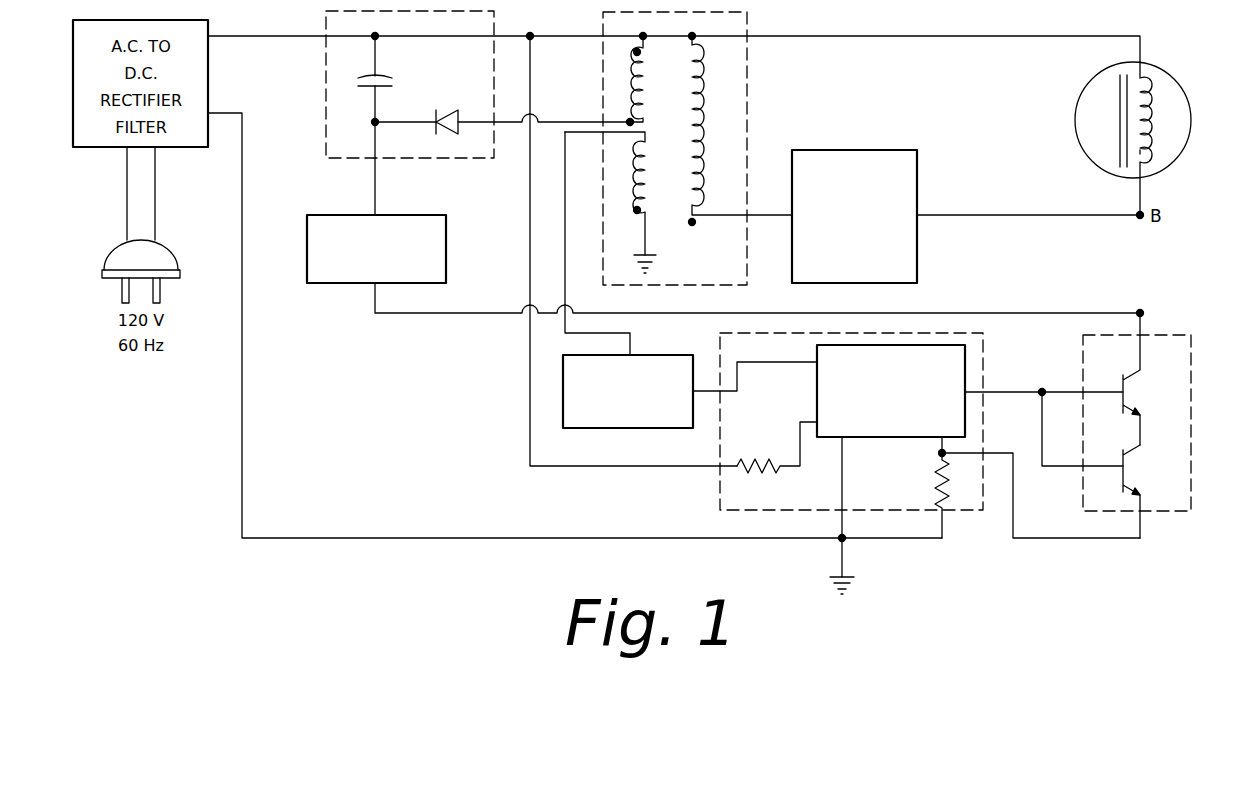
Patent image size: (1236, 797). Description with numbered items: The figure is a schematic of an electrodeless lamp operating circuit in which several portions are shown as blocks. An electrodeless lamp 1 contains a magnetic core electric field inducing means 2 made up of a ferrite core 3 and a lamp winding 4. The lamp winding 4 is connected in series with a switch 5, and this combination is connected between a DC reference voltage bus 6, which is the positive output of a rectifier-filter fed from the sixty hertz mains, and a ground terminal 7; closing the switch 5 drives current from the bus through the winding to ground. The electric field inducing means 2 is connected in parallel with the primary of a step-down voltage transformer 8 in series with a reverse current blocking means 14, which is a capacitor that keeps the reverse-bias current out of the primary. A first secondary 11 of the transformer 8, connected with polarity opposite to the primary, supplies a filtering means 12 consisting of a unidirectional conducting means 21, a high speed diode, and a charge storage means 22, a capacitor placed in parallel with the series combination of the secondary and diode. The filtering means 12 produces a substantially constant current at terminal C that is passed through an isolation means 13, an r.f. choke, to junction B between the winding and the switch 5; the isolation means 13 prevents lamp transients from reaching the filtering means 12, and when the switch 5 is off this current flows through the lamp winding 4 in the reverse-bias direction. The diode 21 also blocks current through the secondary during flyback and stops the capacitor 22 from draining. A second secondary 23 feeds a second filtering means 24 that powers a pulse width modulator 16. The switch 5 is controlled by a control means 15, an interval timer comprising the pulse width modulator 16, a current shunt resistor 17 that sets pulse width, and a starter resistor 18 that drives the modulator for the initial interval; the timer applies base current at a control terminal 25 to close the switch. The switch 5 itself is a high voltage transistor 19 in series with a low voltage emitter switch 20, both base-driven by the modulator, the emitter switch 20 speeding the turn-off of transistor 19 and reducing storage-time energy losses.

The electrodeless lamp 1 is at (1145, 129).
The electric field inducing means 2 is at (1153, 126).
The ferrite core 3 is at (1120, 118).
The lamp winding 4 is at (1143, 139).
The switch 5 is at (1110, 508).
The DC reference voltage bus 6 is at (982, 36).
The ground terminal 7 is at (847, 540).
The voltage transformer 8 is at (634, 283).
The first secondary 11 is at (636, 73).
The filtering means 12 is at (360, 154).
The isolation means 13 is at (314, 221).
The reverse current blocking means 14 is at (820, 152).
The control means 15 is at (758, 505).
The pulse width modulator 16 is at (817, 391).
The current shunt resistor 17 is at (937, 480).
The starter resistor 18 is at (761, 462).
The high voltage transistor 19 is at (1130, 392).
The emitter switch 20 is at (1130, 468).
The unidirectional conducting means 21 is at (440, 116).
The charge storage means 22 is at (382, 78).
The second secondary 23 is at (642, 182).
The second filtering means 24 is at (650, 361).
The control terminal 25 is at (1076, 417).